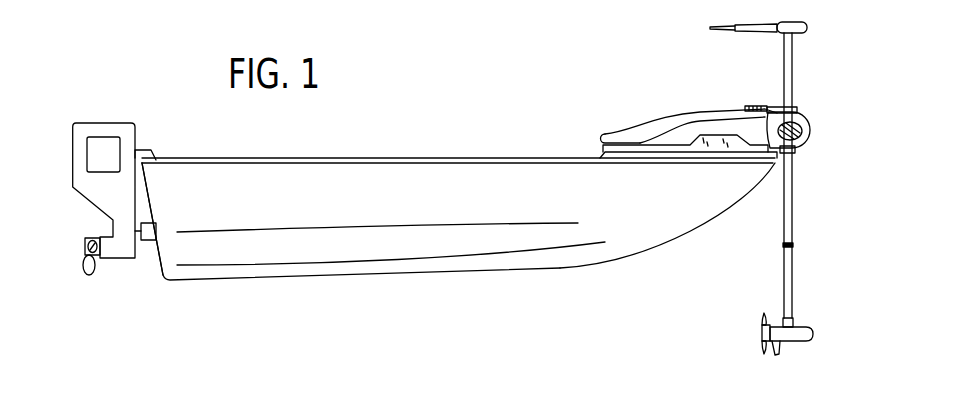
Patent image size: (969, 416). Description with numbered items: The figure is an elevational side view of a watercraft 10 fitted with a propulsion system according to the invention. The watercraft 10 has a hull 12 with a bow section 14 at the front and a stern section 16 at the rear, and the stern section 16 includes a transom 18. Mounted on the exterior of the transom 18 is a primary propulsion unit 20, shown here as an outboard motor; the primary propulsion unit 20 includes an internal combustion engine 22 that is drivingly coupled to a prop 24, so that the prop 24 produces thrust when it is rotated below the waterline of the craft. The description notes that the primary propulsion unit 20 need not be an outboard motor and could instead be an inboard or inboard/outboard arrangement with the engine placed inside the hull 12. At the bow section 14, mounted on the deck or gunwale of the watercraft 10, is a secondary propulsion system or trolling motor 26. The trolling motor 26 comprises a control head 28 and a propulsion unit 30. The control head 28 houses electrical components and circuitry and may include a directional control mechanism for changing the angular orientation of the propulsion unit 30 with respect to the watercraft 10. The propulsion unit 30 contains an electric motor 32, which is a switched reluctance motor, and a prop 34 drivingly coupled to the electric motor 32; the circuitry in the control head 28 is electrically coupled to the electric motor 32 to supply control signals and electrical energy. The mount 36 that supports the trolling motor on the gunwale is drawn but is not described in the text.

The watercraft 10 is at (422, 108).
The hull 12 is at (432, 245).
The bow section 14 is at (696, 239).
The stern section 16 is at (171, 150).
The transom 18 is at (157, 246).
The primary propulsion unit 20 is at (93, 211).
The internal combustion engine 22 is at (102, 137).
The prop 24 is at (87, 276).
The trolling motor 26 is at (793, 68).
The control head 28 is at (790, 20).
The propulsion unit 30 is at (797, 313).
The electric motor 32 is at (790, 343).
The prop 34 is at (762, 348).
The trolling motor mount 36 is at (632, 131).